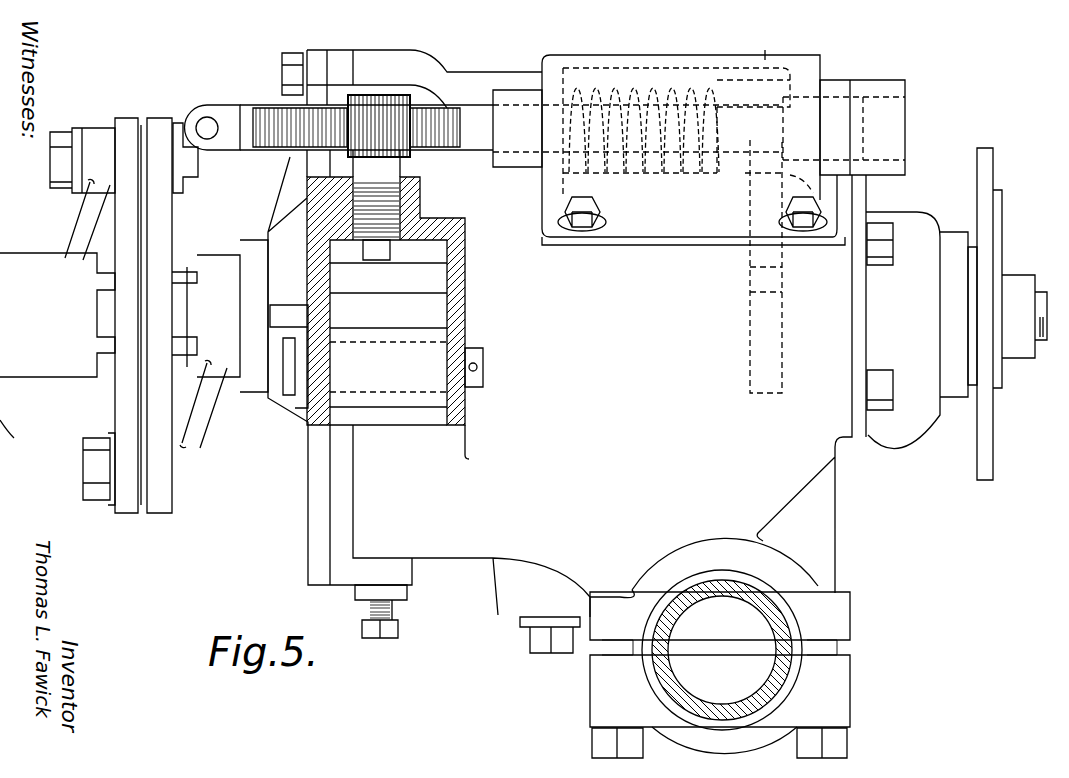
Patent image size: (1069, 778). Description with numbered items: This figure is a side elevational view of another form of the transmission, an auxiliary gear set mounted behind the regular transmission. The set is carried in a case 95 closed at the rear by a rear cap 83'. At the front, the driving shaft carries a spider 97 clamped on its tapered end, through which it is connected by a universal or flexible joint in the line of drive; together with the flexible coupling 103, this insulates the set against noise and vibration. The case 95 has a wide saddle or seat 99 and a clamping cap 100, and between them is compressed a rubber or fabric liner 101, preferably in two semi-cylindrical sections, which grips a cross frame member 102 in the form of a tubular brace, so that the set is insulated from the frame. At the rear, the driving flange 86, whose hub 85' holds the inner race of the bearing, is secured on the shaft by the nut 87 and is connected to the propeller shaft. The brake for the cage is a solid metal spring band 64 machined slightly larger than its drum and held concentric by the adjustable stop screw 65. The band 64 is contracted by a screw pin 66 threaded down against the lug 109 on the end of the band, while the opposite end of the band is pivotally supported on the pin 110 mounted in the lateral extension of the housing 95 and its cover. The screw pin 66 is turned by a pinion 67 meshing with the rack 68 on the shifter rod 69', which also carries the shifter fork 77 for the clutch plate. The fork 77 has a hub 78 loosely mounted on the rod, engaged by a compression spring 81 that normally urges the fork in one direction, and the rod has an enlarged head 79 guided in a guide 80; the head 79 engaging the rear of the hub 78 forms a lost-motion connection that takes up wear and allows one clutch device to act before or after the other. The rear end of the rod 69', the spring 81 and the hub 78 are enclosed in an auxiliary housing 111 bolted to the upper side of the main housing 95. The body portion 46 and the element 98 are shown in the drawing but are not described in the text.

The bracket body 46 is at (318, 485).
The brake band 64 is at (420, 415).
The stop screw 65 is at (370, 608).
The screw pin 66 is at (415, 182).
The pinion 67 is at (377, 120).
The rack 68 is at (427, 122).
The shifter rod 69' is at (219, 111).
The shifter fork 77 is at (750, 198).
The hub 78 is at (760, 47).
The head 79 is at (846, 108).
The guide 80 is at (895, 82).
The compression spring 81 is at (633, 172).
The rear cap 83' is at (917, 343).
The hub 85' is at (1001, 314).
The driving flange 86 is at (995, 468).
The nut 87 is at (1018, 347).
The case 95 is at (812, 452).
The spider 97 is at (205, 398).
The hub 98 is at (203, 262).
The saddle 99 is at (800, 592).
The clamping cap 100 is at (710, 745).
The liner 101 is at (683, 630).
The cross frame member 102 is at (725, 576).
The flexible coupling 103 is at (118, 403).
The lug 109 is at (435, 280).
The pin 110 is at (483, 355).
The auxiliary housing 111 is at (695, 228).